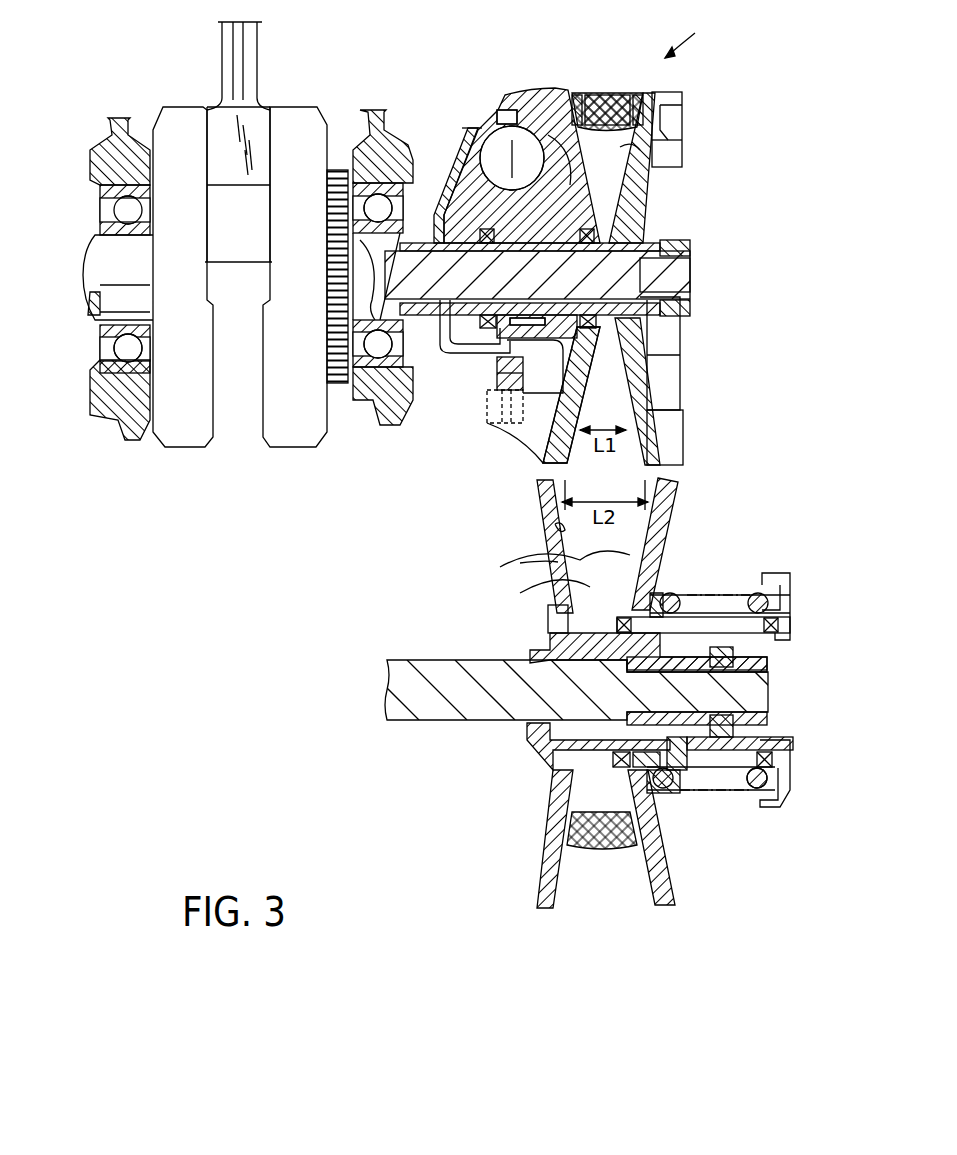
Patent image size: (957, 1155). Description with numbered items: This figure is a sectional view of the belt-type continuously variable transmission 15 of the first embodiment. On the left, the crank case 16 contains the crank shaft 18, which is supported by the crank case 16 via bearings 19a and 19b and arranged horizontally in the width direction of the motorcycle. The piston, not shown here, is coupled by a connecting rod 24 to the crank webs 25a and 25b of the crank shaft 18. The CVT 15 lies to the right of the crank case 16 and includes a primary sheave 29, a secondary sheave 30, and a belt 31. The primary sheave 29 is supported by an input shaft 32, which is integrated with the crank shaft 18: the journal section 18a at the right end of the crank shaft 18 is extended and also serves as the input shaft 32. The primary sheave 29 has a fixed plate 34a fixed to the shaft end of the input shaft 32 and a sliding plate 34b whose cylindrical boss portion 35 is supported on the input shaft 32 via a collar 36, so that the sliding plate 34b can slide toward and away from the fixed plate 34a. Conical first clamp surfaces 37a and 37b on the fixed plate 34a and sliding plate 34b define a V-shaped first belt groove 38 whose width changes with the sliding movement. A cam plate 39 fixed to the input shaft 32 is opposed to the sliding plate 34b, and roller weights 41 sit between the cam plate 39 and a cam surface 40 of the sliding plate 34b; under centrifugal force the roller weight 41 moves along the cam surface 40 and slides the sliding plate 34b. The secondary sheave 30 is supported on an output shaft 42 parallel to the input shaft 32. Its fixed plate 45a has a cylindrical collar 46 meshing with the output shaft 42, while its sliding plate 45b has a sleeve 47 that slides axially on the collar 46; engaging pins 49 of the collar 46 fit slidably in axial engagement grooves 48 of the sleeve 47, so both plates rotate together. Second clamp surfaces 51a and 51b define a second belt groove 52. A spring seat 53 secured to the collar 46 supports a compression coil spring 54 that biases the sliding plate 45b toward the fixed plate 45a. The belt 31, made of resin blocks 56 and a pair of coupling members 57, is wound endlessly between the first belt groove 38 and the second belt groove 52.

The belt-type continuously variable transmission 15 is at (692, 34).
The crank case 16 is at (370, 410).
The crank shaft 18 is at (100, 322).
The journal section 18a is at (327, 312).
The bearing 19a is at (108, 237).
The bearing 19b is at (380, 190).
The connecting rod 24 is at (258, 48).
The crank web 25a is at (183, 440).
The crank web 25b is at (290, 440).
The primary sheave 29 is at (715, 345).
The secondary sheave 30 is at (577, 732).
The belt 31 is at (602, 92).
The input shaft 32 is at (462, 290).
The fixed plate 34a is at (640, 362).
The sliding plate 34b is at (570, 403).
The boss portion 35 is at (510, 328).
The collar 36 is at (665, 312).
The first clamp surface 37a is at (623, 147).
The first clamp surface 37b is at (590, 172).
The first belt groove 38 is at (605, 200).
The cam plate 39 is at (457, 182).
The cam surface 40 is at (568, 165).
The roller weight 41 is at (507, 130).
The output shaft 42 is at (423, 705).
The fixed plate 45a is at (555, 877).
The sliding plate 45b is at (642, 857).
The collar 46 is at (557, 740).
The sleeve 47 is at (655, 603).
The engagement groove 48 is at (720, 615).
The engaging pin 49 is at (698, 615).
The second clamp surface 51a is at (558, 528).
The second clamp surface 51b is at (553, 556).
The second belt groove 52 is at (582, 544).
The spring seat 53 is at (777, 803).
The compression coil spring 54 is at (752, 790).
The resin block 56 is at (620, 95).
The coupling member 57 is at (578, 100).